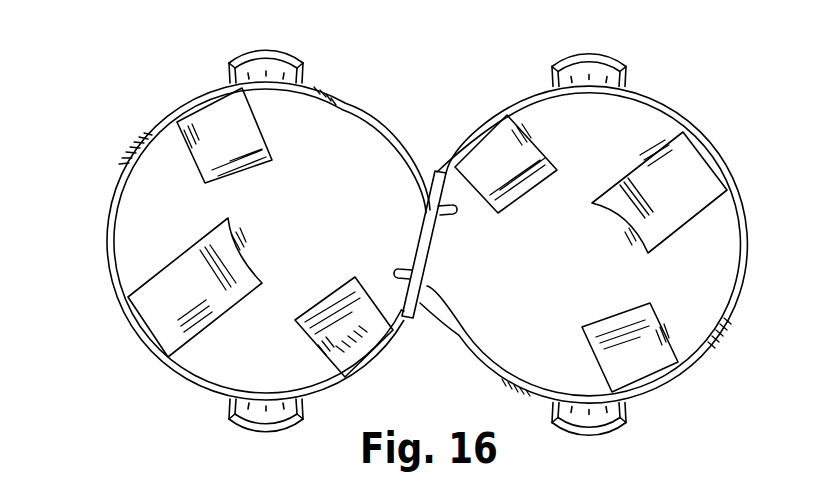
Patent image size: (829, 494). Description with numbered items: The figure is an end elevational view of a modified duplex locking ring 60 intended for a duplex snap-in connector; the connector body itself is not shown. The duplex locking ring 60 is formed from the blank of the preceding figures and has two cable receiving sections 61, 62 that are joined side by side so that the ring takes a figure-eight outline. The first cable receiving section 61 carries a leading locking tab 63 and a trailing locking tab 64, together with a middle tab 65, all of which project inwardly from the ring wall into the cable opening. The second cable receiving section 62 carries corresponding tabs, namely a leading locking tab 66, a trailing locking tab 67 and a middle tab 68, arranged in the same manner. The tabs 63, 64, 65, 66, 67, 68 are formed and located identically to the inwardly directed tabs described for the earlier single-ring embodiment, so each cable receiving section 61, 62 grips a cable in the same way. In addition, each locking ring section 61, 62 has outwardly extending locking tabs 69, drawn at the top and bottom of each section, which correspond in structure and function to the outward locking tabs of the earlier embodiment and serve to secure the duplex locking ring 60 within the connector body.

The duplex locking ring 60 is at (88, 166).
The cable receiving section 61 is at (371, 112).
The cable receiving section 62 is at (661, 100).
The leading locking tab 63 is at (218, 132).
The trailing locking tab 64 is at (350, 337).
The middle tab 65 is at (164, 309).
The leading locking tab 66 is at (493, 152).
The trailing locking tab 67 is at (632, 362).
The middle tab 68 is at (688, 178).
The outwardly extending locking tab 69 is at (258, 54).